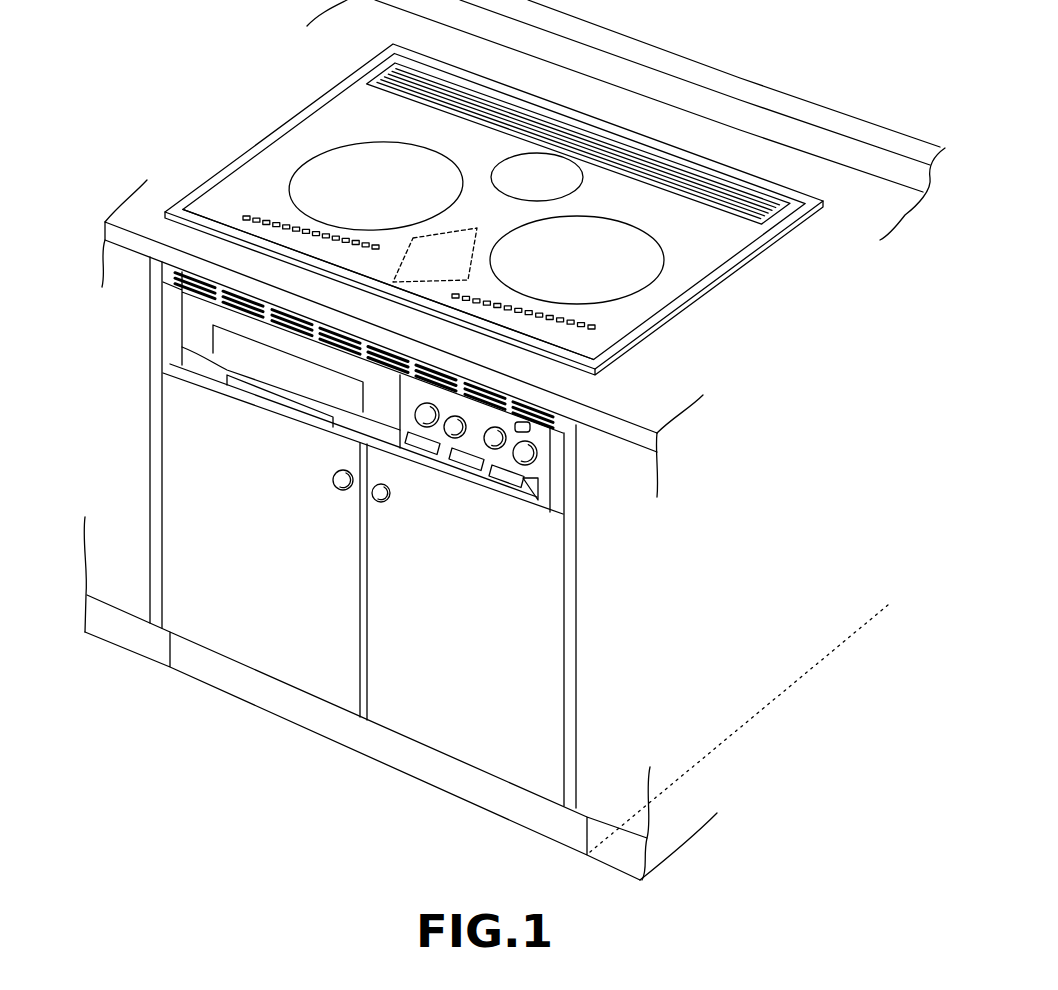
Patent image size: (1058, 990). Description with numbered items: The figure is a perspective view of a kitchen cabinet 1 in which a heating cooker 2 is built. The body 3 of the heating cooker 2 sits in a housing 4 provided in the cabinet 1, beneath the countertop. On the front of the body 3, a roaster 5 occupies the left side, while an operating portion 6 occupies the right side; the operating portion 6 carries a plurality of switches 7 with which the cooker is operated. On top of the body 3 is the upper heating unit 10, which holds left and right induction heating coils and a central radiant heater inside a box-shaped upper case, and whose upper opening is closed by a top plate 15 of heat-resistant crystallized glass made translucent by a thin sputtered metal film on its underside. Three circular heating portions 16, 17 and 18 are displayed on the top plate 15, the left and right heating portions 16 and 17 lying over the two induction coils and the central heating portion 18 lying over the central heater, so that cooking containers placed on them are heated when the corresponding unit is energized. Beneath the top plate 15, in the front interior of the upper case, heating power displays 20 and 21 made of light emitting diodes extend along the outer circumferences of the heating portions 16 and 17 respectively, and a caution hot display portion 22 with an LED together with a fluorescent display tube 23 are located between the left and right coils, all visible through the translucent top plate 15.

The cabinet 1 is at (643, 477).
The heating cooker 2 is at (175, 338).
The body 3 is at (173, 330).
The housing 4 is at (168, 308).
The roaster 5 is at (296, 377).
The operating portion 6 is at (473, 480).
The switches 7 is at (496, 490).
The upper heating unit 10 is at (732, 282).
The top plate 15 is at (324, 124).
The left heating portion 16 is at (371, 143).
The right heating portion 17 is at (657, 244).
The central heating portion 18 is at (585, 181).
The left heating power display 20 is at (303, 242).
The right heating power display 21 is at (537, 328).
The caution hot display portion 22 is at (452, 240).
The fluorescent display tube 23 is at (395, 284).